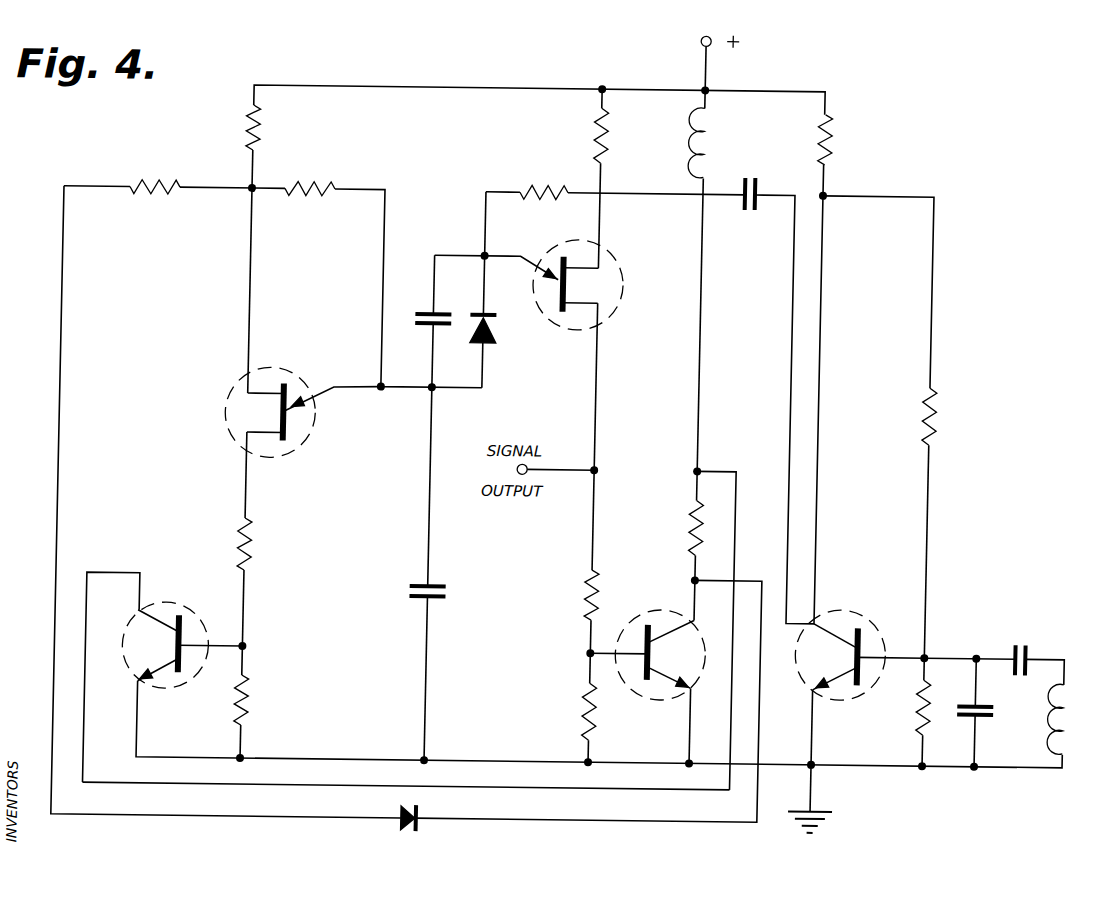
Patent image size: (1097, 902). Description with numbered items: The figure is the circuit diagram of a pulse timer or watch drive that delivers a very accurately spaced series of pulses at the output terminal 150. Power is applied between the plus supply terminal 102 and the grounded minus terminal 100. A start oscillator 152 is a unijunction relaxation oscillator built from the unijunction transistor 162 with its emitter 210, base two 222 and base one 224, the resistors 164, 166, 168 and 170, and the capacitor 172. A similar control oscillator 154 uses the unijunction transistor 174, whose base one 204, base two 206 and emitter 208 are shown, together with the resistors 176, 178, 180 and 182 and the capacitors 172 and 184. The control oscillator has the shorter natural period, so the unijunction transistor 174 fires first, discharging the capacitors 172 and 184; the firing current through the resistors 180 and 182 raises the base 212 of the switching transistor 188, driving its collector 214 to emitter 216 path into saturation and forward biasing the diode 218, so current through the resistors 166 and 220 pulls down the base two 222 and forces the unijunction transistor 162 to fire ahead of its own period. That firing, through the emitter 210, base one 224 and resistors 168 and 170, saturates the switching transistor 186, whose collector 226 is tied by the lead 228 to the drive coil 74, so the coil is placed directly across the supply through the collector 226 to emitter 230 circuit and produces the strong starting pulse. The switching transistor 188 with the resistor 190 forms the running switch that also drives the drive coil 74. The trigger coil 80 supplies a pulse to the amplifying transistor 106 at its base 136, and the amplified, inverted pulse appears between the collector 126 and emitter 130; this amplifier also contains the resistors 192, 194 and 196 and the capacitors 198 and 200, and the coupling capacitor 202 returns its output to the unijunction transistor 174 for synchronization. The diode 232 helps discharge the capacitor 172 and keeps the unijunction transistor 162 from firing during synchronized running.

The drive coil 74 is at (712, 122).
The trigger coil 80 is at (1068, 735).
The negative (grounded) supply terminal 100 is at (827, 760).
The plus supply terminal 102 is at (698, 38).
The amplifying transistor 106 is at (818, 672).
The amplifying transistor collector 126 is at (845, 630).
The amplifying transistor emitter 130 is at (845, 672).
The amplifying transistor base 136 is at (870, 625).
The output terminal 150 is at (523, 466).
The start oscillator 152 is at (238, 381).
The control oscillator 154 is at (614, 248).
The unijunction transistor 162 is at (288, 383).
The resistor 164 is at (312, 185).
The resistor 166 is at (250, 118).
The resistor 168 is at (255, 545).
The resistor 170 is at (258, 702).
The capacitor 172 is at (418, 590).
The unijunction transistor 174 is at (622, 274).
The resistor 176 is at (528, 187).
The resistor 178 is at (597, 132).
The resistor 180 is at (597, 578).
The resistor 182 is at (597, 718).
The capacitor 184 is at (418, 316).
The switching transistor 186 is at (160, 604).
The switching transistor 188 is at (640, 680).
The resistor 190 is at (700, 520).
The resistor 192 is at (830, 130).
The resistor 194 is at (940, 412).
The resistor 196 is at (936, 720).
The capacitor 198 is at (990, 706).
The capacitor 200 is at (1030, 636).
The coupling capacitor 202 is at (750, 206).
The base 1 204 is at (590, 299).
The base 2 206 is at (568, 256).
The emitter 208 is at (522, 253).
The emitter 210 is at (320, 400).
The base 212 is at (625, 649).
The collector 214 is at (685, 618).
The emitter 216 is at (680, 672).
The diode 218 is at (414, 822).
The resistor 220 is at (148, 185).
The base 2 222 is at (260, 398).
The base 1 224 is at (270, 436).
The collector 226 is at (165, 618).
The lead 228 is at (358, 784).
The emitter 230 is at (165, 672).
The diode 232 is at (499, 335).